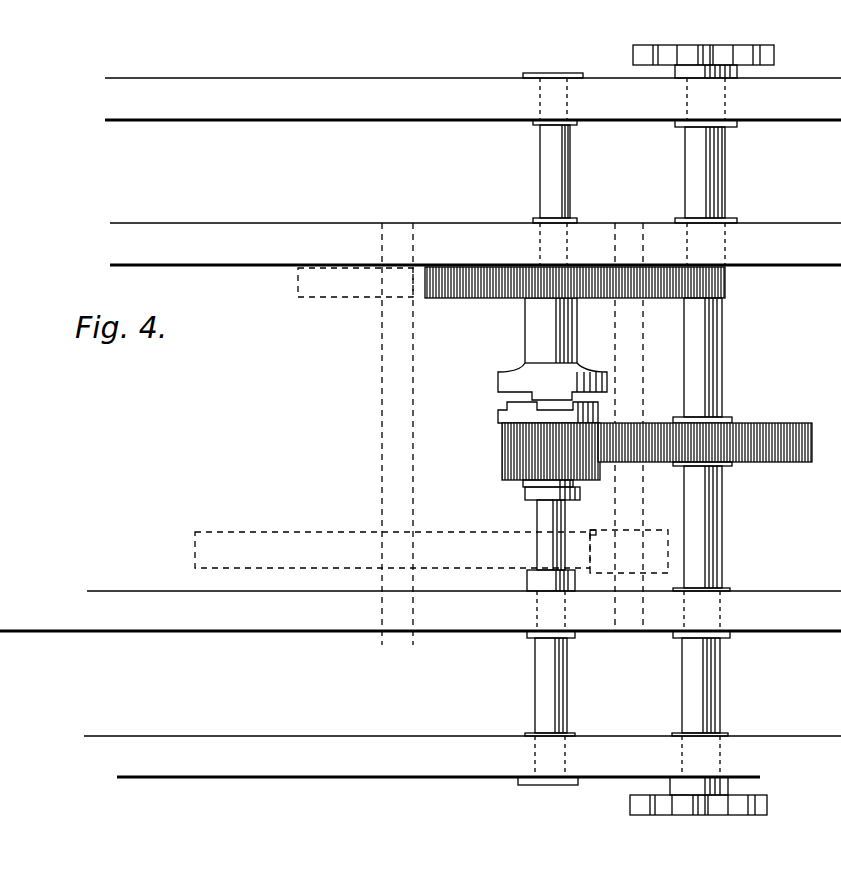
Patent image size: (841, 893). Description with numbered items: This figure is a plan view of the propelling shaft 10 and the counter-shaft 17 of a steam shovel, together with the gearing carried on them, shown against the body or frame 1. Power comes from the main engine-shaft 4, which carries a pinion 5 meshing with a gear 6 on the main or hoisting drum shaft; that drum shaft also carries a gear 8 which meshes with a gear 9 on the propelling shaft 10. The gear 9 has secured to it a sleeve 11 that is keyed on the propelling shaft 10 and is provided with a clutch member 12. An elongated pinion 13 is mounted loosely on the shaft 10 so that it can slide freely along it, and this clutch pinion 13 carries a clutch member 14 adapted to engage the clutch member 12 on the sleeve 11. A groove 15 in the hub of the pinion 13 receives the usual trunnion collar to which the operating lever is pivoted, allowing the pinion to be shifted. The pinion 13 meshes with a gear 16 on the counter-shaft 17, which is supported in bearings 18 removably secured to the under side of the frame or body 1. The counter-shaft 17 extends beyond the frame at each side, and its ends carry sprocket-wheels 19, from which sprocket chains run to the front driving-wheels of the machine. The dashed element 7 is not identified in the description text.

The body or frame 1 is at (217, 89).
The main engine-shaft 4 is at (637, 372).
The pinion 5 is at (648, 546).
The gear 6 is at (252, 538).
The guide rod 7 is at (382, 400).
The gear 8 is at (313, 293).
The gear 9 is at (475, 300).
The propelling shaft 10 is at (535, 686).
The sleeve 11 is at (526, 333).
The clutch member 12 is at (505, 387).
The elongated pinion 13 is at (505, 462).
The clutch member 14 is at (508, 417).
The groove 15 is at (535, 495).
The gear 16 is at (755, 432).
The counter-shaft 17 is at (712, 532).
The bearings 18 is at (678, 128).
The sprocket-wheels 19 is at (777, 58).